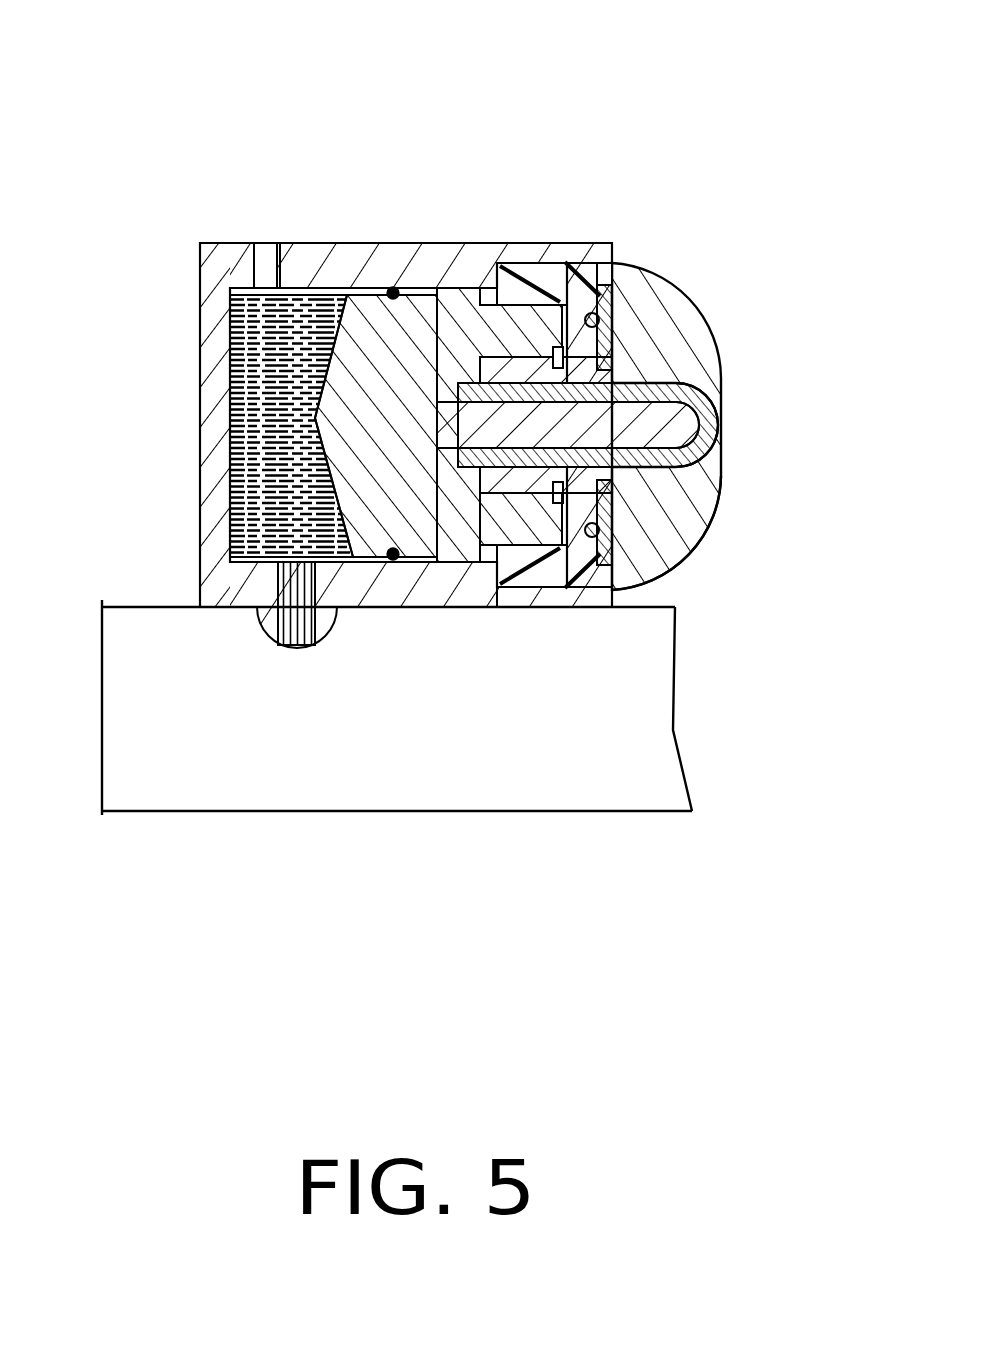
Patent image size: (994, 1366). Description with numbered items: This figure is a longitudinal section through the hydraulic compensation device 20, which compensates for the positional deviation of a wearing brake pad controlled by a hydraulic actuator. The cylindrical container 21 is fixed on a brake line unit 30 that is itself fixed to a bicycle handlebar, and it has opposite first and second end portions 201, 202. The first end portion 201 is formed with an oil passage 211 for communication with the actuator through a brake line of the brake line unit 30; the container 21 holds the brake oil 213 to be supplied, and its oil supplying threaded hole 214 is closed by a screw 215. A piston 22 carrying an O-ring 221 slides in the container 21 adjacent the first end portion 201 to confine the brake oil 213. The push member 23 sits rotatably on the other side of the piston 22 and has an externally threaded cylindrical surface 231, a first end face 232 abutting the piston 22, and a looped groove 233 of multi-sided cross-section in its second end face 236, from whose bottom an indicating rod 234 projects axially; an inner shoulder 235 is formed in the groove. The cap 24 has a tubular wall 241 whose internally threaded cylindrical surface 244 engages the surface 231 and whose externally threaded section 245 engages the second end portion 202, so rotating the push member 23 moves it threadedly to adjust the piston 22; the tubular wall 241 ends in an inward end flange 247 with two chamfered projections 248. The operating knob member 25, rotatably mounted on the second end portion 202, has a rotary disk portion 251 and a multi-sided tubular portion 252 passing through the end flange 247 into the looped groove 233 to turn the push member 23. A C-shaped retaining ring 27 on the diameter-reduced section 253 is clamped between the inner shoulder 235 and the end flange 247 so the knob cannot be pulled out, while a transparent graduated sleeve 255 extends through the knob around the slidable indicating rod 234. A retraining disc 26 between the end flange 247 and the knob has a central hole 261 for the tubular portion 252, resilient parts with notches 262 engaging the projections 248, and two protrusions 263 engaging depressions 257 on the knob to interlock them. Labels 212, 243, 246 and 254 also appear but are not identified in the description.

The hydraulic compensation device 20 is at (180, 273).
The container 21 is at (213, 353).
The first end portion 201 is at (213, 242).
The oil supplying threaded hole 214 is at (250, 275).
The screw 215 is at (268, 258).
The brake oil 213 is at (300, 310).
The piston 22 is at (340, 425).
The push member 23 is at (480, 545).
The looped groove 233 is at (465, 300).
The internally threaded cylindrical surface 244 is at (560, 590).
The lower support band 254 is at (700, 483).
The retraining disc 26 is at (613, 263).
The depressions 257 is at (718, 358).
The upper plate 243 is at (712, 380).
The transparent sleeve 255 is at (725, 440).
The indicating rod 234 is at (722, 420).
The second end portion 202 is at (528, 258).
The inner shoulder 235 is at (518, 250).
The recess top surface 212 is at (553, 262).
The externally threaded section 245 is at (560, 348).
The C-shaped retaining ring 27 is at (598, 318).
The chamfered projections 248 is at (606, 300).
The upper column 246 is at (603, 297).
The protrusions 263 is at (615, 330).
The rotary disk portion 251 is at (700, 508).
The central hole 261 is at (613, 490).
The operating knob member 25 is at (605, 505).
The diameter-reduced section 253 is at (620, 587).
The notches 262 is at (640, 600).
The cap 24 is at (600, 580).
The end flange 247 is at (618, 595).
The second end face 236 is at (585, 590).
The externally threaded cylindrical surface 231 is at (520, 560).
The tubular wall 241 is at (507, 535).
The first end face 232 is at (462, 535).
The tubular portion 252 is at (412, 555).
The O-ring 221 is at (393, 288).
The brake line unit 30 is at (252, 812).
The oil passage 211 is at (290, 583).